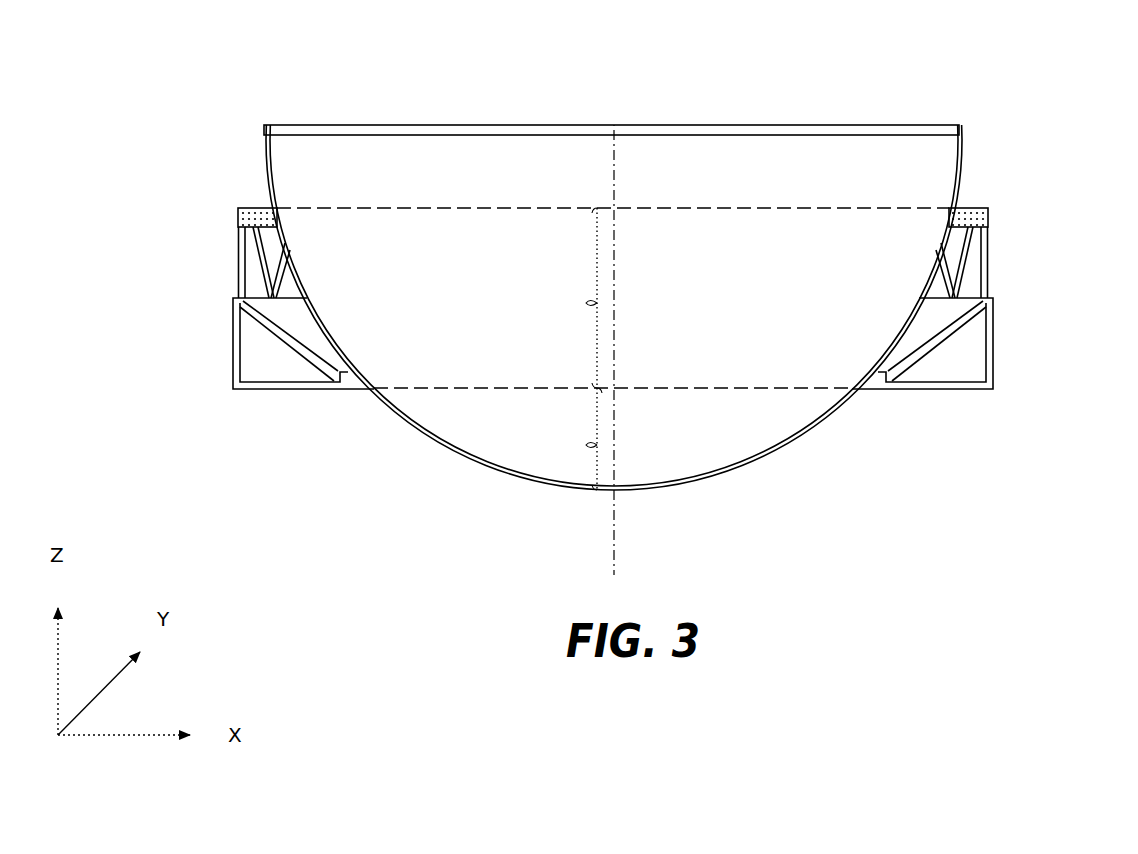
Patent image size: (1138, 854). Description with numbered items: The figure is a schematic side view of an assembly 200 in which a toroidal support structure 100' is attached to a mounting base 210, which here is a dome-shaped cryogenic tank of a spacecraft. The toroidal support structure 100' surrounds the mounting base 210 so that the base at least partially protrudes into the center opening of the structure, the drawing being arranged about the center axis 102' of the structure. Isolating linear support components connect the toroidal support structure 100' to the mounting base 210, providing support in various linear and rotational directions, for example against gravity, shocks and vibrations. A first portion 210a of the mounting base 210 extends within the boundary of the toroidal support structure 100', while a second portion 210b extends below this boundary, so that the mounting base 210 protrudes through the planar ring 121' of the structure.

The assembly 200 is at (866, 104).
The center axis 102' is at (611, 94).
The mounting base 210 is at (972, 210).
The portion of mounting base 210a is at (553, 298).
The portion of mounting base 210b is at (558, 439).
The planar ring 121' is at (922, 384).
The toroidal support structure 100' is at (672, 398).